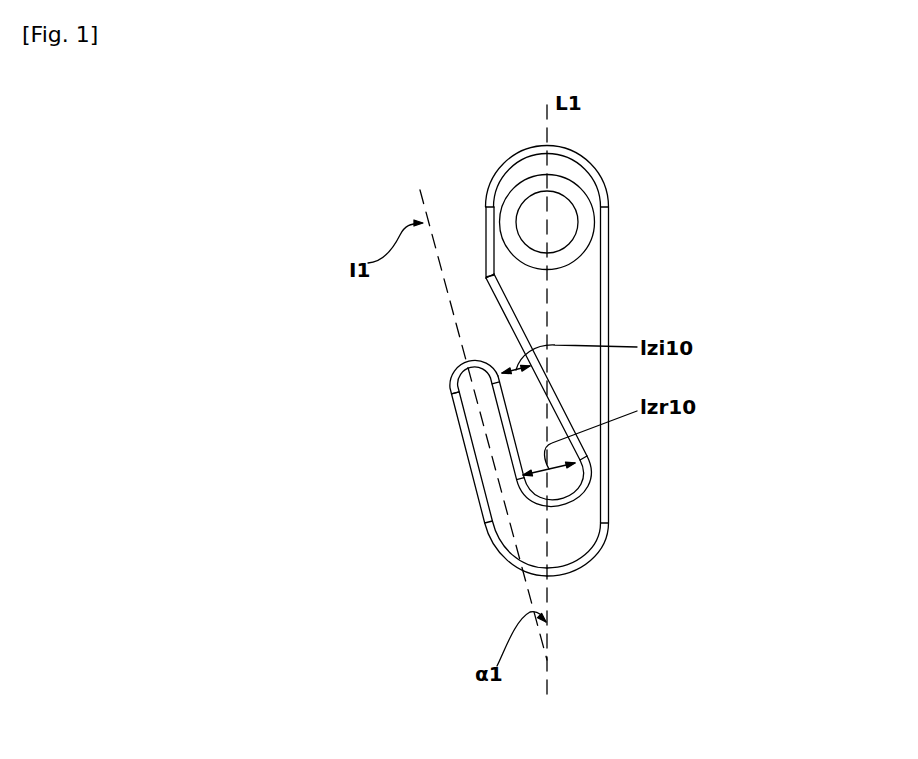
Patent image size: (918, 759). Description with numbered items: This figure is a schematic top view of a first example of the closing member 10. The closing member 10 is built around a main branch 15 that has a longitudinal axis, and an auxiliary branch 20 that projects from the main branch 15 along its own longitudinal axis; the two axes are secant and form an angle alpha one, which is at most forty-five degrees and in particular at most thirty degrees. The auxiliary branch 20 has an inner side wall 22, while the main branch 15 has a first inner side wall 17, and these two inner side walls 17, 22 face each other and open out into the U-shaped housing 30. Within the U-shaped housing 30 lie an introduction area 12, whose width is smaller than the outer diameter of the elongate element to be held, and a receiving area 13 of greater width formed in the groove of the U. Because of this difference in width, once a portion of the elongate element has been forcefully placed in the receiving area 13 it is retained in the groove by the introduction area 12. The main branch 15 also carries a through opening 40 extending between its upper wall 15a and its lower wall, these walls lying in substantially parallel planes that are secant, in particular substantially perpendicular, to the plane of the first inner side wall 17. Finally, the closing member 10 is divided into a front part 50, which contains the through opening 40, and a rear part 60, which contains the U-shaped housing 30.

The closing member 10 is at (294, 487).
The introduction area 12 is at (486, 351).
The receiving area 13 is at (563, 452).
The main branch 15 is at (583, 323).
The upper wall 15a is at (543, 367).
The first inner side wall 17 is at (503, 311).
The auxiliary branch 20 is at (530, 462).
The inner side wall 22 is at (520, 457).
The U-shaped housing 30 is at (530, 403).
The through opening 40 is at (563, 190).
The front part 50 is at (748, 140).
The rear part 60 is at (748, 282).